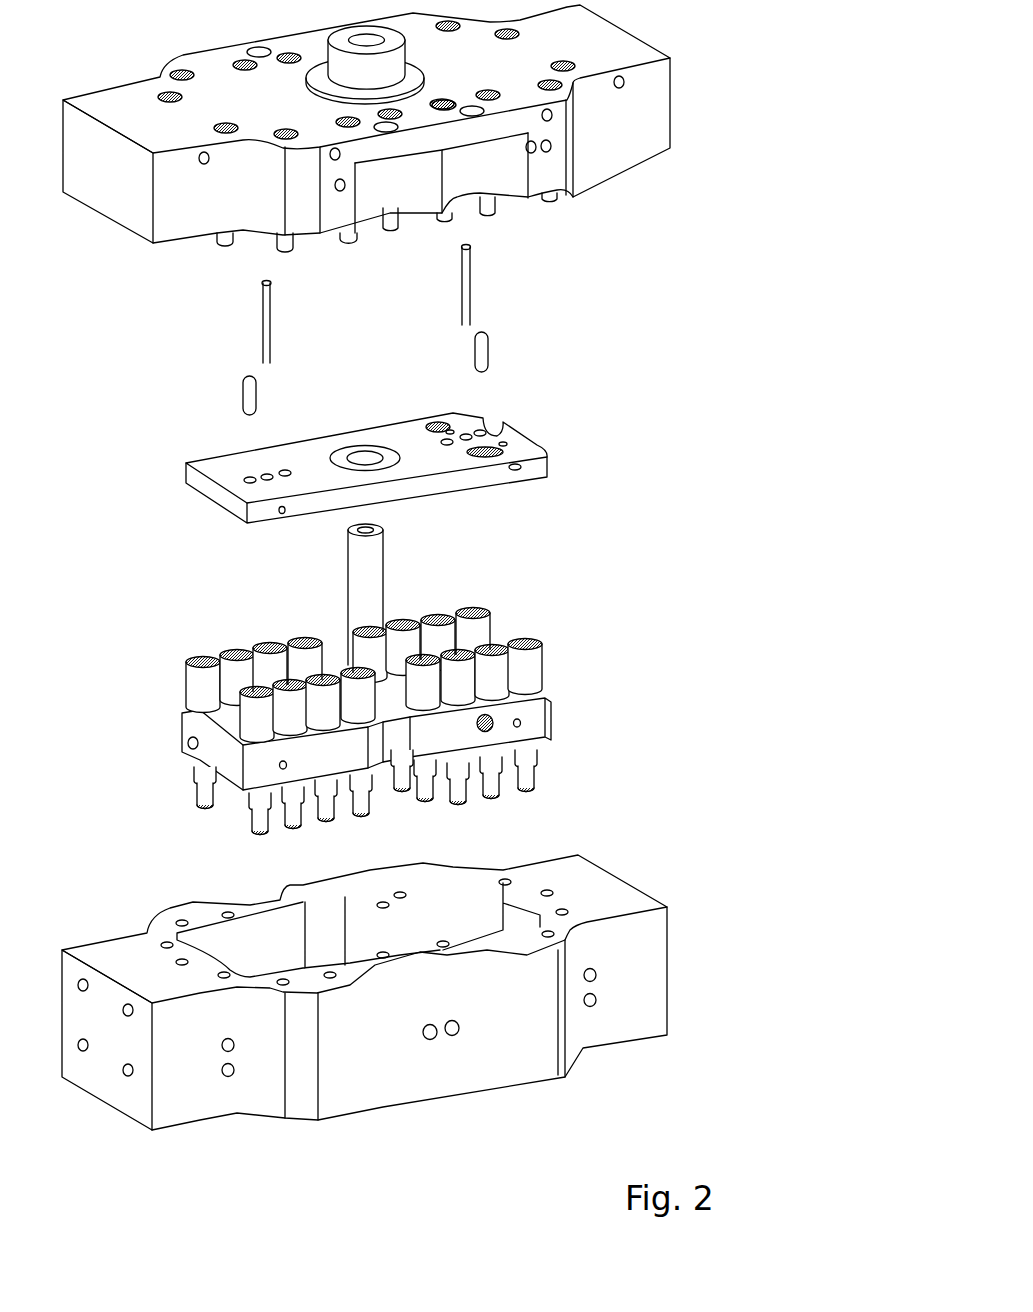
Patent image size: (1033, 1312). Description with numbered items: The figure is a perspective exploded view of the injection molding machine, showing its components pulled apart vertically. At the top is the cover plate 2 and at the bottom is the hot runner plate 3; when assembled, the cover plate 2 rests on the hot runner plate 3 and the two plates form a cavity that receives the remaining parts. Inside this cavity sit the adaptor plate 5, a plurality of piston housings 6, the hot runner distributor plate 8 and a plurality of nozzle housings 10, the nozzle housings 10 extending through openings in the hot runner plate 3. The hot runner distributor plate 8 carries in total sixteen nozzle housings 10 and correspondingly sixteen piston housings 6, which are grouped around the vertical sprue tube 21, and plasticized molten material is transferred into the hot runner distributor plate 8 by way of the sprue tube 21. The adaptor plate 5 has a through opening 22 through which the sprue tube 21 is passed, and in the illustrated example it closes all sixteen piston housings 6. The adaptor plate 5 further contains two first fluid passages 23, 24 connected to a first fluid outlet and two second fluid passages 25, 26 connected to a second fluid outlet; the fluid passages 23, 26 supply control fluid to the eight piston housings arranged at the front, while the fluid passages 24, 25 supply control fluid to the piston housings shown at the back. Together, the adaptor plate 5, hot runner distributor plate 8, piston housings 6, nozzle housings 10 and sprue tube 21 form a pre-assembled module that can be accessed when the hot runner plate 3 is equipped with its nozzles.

The cover plate 2 is at (610, 143).
The hot runner plate 3 is at (592, 878).
The adaptor plate 5 is at (533, 467).
The piston housings 6 is at (532, 668).
The hot runner distributor plate 8 is at (542, 717).
The nozzle housings 10 is at (530, 768).
The sprue tube 21 is at (385, 573).
The through opening 22 is at (383, 452).
The first fluid passage 23 is at (505, 452).
The first fluid passage 24 is at (445, 425).
The second fluid passage 25 is at (450, 425).
The second fluid passage 26 is at (508, 447).